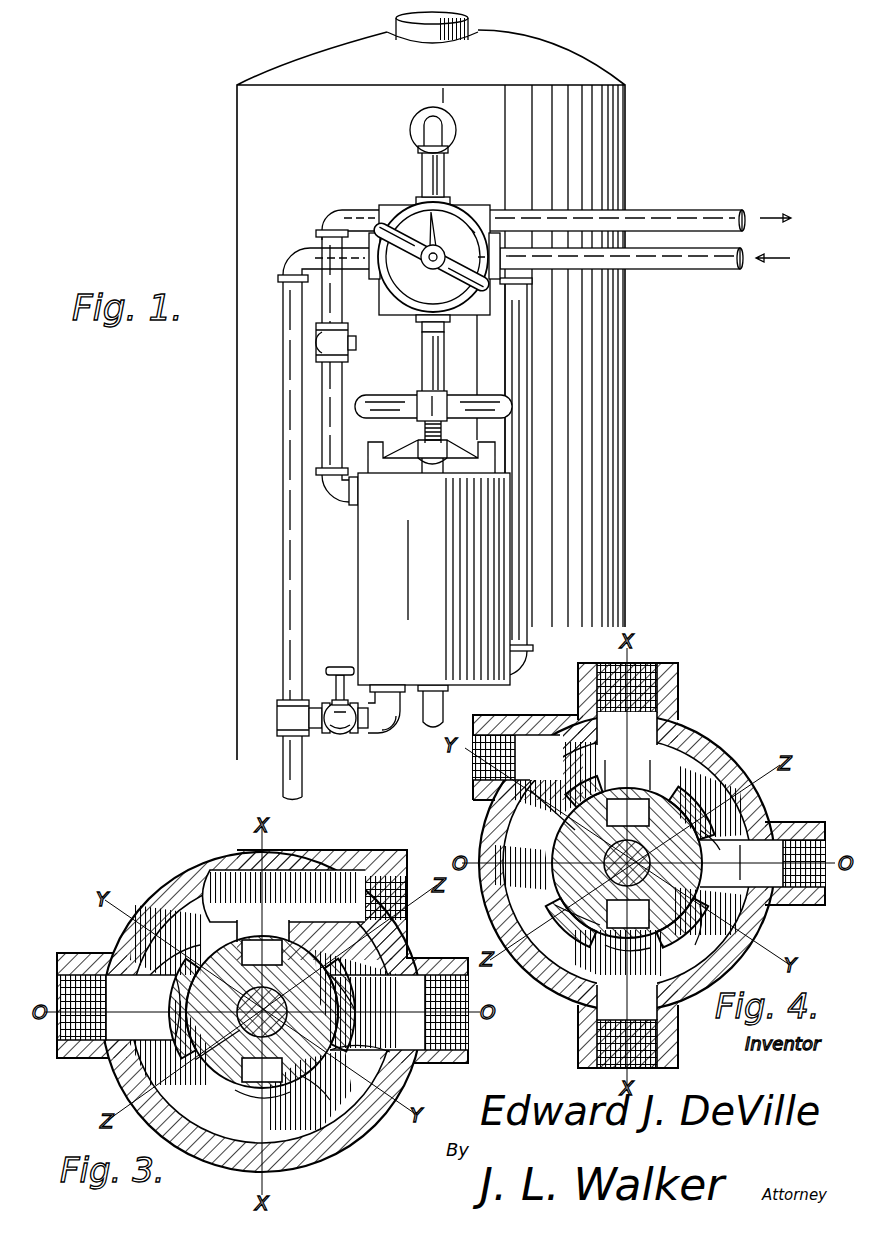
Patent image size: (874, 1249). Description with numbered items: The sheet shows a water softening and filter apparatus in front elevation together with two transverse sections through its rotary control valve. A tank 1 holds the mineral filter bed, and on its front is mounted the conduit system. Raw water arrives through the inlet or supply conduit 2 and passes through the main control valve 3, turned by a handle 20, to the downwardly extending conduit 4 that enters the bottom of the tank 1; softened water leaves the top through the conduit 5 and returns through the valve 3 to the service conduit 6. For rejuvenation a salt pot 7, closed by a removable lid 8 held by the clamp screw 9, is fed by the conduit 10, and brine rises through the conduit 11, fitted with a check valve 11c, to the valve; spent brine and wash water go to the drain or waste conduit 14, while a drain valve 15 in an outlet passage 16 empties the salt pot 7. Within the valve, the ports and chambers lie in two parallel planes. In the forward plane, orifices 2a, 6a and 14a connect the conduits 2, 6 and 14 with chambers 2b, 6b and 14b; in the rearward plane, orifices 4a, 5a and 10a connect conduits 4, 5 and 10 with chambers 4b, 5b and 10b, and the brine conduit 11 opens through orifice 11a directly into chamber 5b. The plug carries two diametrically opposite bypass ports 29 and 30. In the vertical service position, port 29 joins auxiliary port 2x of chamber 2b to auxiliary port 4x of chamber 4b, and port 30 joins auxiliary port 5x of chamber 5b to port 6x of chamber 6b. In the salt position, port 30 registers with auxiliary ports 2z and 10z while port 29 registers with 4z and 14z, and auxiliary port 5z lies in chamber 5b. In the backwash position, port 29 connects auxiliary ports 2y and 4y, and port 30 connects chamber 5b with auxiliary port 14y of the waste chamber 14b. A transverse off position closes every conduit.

In FIG. 1, the tank 1 is at (238, 440).
In FIG. 1, the inlet or supply conduit 2 is at (705, 262).
In FIG. 1, the main control valve 3 is at (470, 222).
In FIG. 1, the downwardly extending conduit 4 is at (422, 366).
In FIG. 1, the conduit 5 is at (424, 169).
In FIG. 1, the supply or service conduit 6 is at (675, 222).
In FIG. 1, the salt pot 7 is at (434, 579).
In FIG. 1, the removable lid 8 is at (408, 468).
In FIG. 1, the clamp screw 9 is at (424, 432).
In FIG. 1, the conduit 10 is at (508, 352).
In FIG. 1, the conduit 11 is at (337, 298).
In FIG. 1, the orifice 11a is at (392, 212).
In FIG. 4, the orifice 11a is at (490, 758).
In FIG. 1, the check valve 11c is at (342, 340).
In FIG. 1, the drain or waste conduit 14 is at (290, 538).
In FIG. 1, the drain valve 15 is at (340, 736).
In FIG. 1, the outlet passage 16 is at (385, 736).
In FIG. 1, the handle 20 is at (472, 300).
In FIG. 4, the bypass port 29 is at (630, 862).
In FIG. 3, the bypass port 29 is at (262, 1012).
In FIG. 4, the bypass port 30 is at (628, 812).
In FIG. 3, the bypass port 30 is at (262, 952).
In FIG. 3, the orifice 2a is at (455, 1050).
In FIG. 3, the inlet or supply chamber 2b is at (360, 1062).
In FIG. 3, the auxiliary port 2x is at (262, 1092).
In FIG. 3, the auxiliary port 2y is at (330, 1092).
In FIG. 3, the auxiliary port 2z is at (335, 962).
In FIG. 4, the orifice 4a is at (655, 1050).
In FIG. 4, the chamber 4b is at (627, 997).
In FIG. 4, the auxiliary port 4x is at (630, 938).
In FIG. 4, the auxiliary port 4y is at (695, 925).
In FIG. 4, the auxiliary port 4z is at (570, 905).
In FIG. 4, the orifice 5a is at (640, 675).
In FIG. 4, the chamber 5b is at (627, 732).
In FIG. 4, the auxiliary port 5x is at (633, 806).
In FIG. 4, the auxiliary port 5z is at (575, 818).
In FIG. 3, the orifice 6a is at (405, 880).
In FIG. 3, the chamber 6b is at (284, 896).
In FIG. 3, the port 6x is at (263, 924).
In FIG. 4, the orifice 10a is at (800, 850).
In FIG. 4, the chamber 10b is at (741, 861).
In FIG. 4, the auxiliary port 10z is at (718, 822).
In FIG. 3, the orifice 14a is at (78, 1040).
In FIG. 3, the chamber 14b is at (152, 1007).
In FIG. 3, the auxiliary port 14y is at (176, 949).
In FIG. 3, the auxiliary port 14z is at (205, 1072).